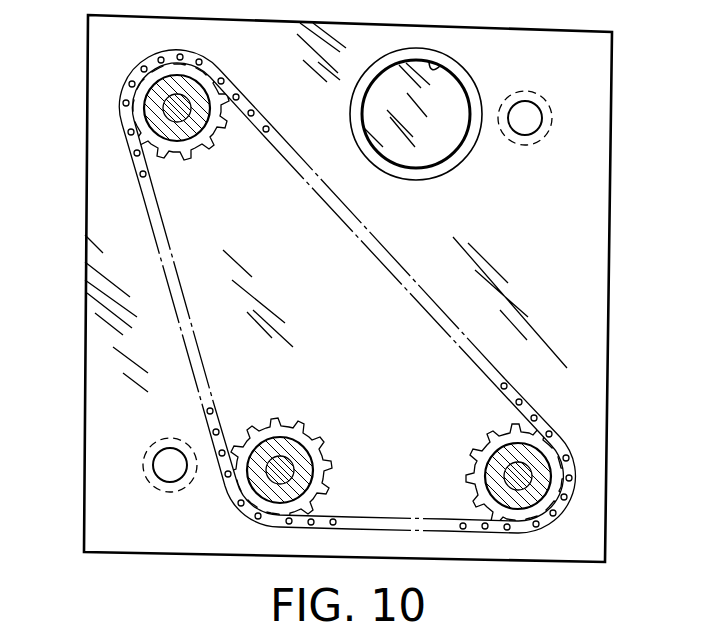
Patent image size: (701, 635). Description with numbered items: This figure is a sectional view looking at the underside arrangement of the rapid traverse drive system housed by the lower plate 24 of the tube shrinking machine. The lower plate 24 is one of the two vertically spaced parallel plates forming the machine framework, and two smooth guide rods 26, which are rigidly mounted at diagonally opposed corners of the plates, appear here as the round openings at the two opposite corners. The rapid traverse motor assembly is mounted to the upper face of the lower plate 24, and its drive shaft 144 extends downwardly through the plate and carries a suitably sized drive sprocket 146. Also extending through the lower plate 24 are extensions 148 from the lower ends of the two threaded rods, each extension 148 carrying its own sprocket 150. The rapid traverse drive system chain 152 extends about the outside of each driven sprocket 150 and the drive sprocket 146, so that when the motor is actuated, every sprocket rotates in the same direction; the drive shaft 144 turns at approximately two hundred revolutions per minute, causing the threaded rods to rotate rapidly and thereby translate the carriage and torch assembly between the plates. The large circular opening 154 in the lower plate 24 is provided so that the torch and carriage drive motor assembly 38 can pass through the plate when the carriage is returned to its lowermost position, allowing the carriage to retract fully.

The lower plate 24 is at (598, 210).
The guide rods 26 is at (527, 110).
The torch and carriage drive motor assembly 38 is at (437, 117).
The drive shaft 144 is at (279, 450).
The drive sprocket 146 is at (303, 446).
The extensions 148 is at (393, 285).
The sprocket 150 is at (198, 158).
The rapid traverse drive system chain 152 is at (147, 146).
The opening 154 is at (437, 67).